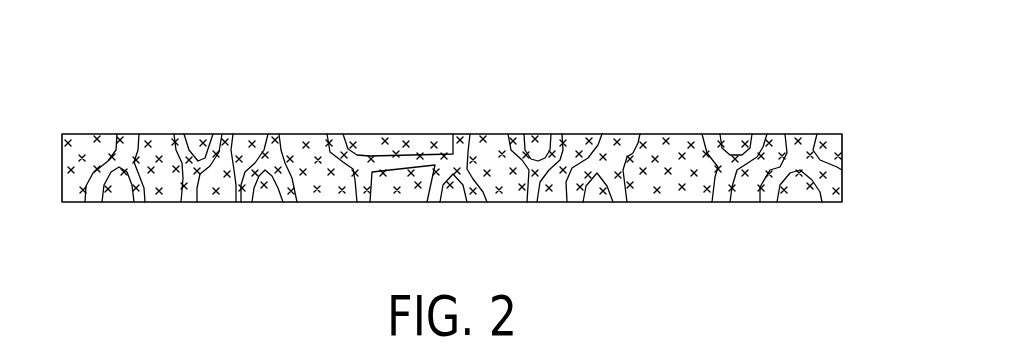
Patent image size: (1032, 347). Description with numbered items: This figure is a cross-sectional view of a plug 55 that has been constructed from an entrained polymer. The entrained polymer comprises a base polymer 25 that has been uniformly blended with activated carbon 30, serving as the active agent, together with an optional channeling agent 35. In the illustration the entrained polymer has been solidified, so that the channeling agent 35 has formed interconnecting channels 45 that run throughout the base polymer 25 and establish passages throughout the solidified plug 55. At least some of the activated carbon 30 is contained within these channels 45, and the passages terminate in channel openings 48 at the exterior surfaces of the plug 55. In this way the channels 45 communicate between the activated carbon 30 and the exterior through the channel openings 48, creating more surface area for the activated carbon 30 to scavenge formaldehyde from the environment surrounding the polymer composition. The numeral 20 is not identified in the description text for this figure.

The composite panel 20 is at (653, 118).
The base polymer 25 is at (80, 134).
The activated carbon 30 is at (365, 203).
The channeling agent 35 is at (223, 134).
The interconnecting channels 45 is at (175, 134).
The channel openings 48 is at (564, 134).
The plug 55 is at (855, 156).